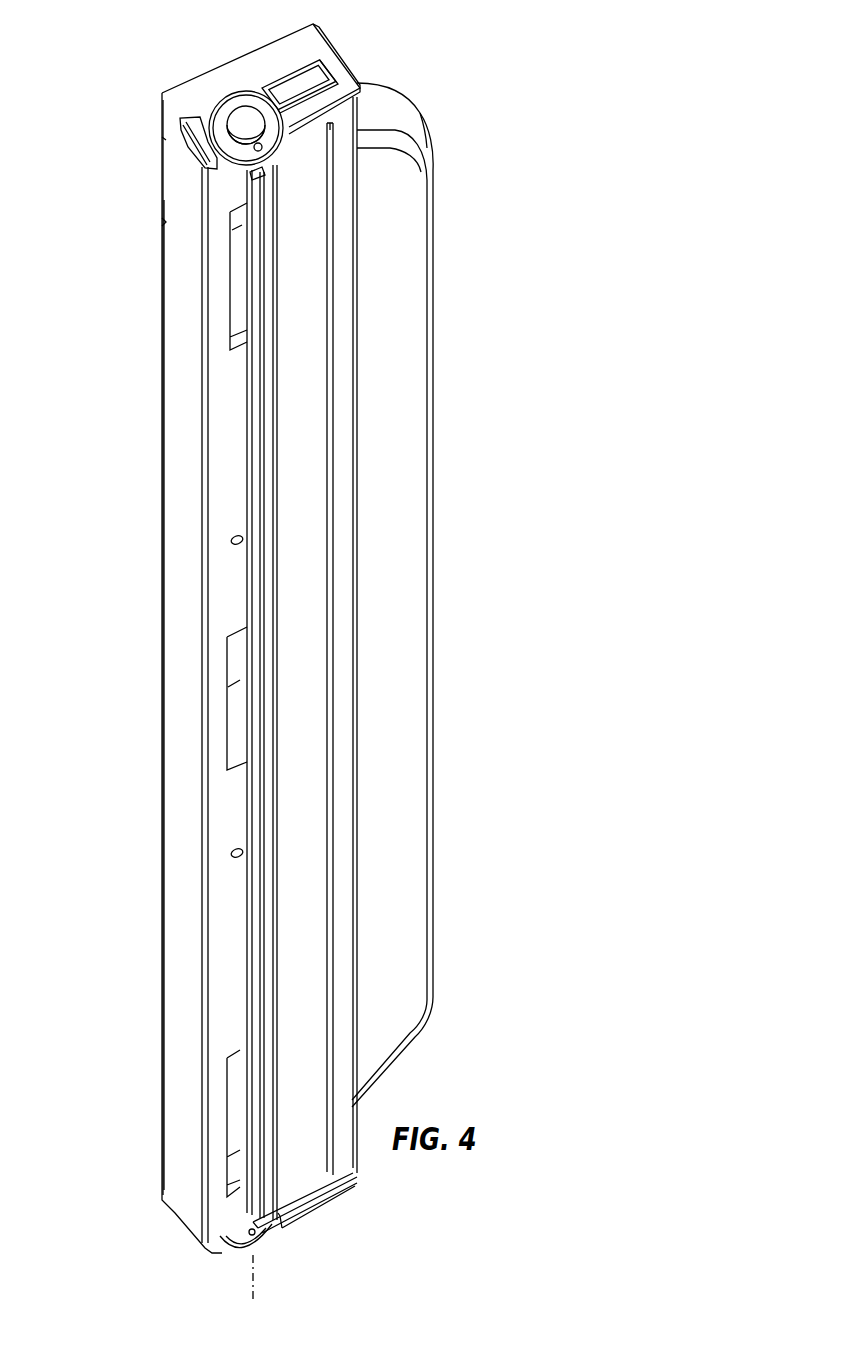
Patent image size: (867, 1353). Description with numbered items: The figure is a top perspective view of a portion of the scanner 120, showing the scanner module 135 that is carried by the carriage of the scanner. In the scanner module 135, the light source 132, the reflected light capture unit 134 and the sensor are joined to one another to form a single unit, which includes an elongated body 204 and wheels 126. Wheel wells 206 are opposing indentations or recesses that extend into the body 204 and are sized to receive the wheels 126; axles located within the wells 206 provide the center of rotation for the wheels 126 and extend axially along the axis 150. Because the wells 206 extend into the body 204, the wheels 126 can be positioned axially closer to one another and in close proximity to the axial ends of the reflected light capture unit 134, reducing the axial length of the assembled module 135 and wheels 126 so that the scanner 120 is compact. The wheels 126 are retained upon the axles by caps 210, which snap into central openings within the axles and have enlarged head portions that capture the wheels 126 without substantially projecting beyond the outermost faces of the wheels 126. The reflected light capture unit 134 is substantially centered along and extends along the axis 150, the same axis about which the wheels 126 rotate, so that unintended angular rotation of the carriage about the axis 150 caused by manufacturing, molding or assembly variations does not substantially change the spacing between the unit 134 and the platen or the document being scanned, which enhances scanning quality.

The scanner 120 is at (89, 166).
The wheels 126 is at (237, 103).
The light source 132 is at (273, 235).
The reflected light capture unit 134 is at (247, 558).
The scanner module 135 is at (166, 243).
The axis 150 is at (256, 1287).
The body 204 is at (160, 350).
The wheel wells 206 is at (213, 110).
The caps 210 is at (251, 118).